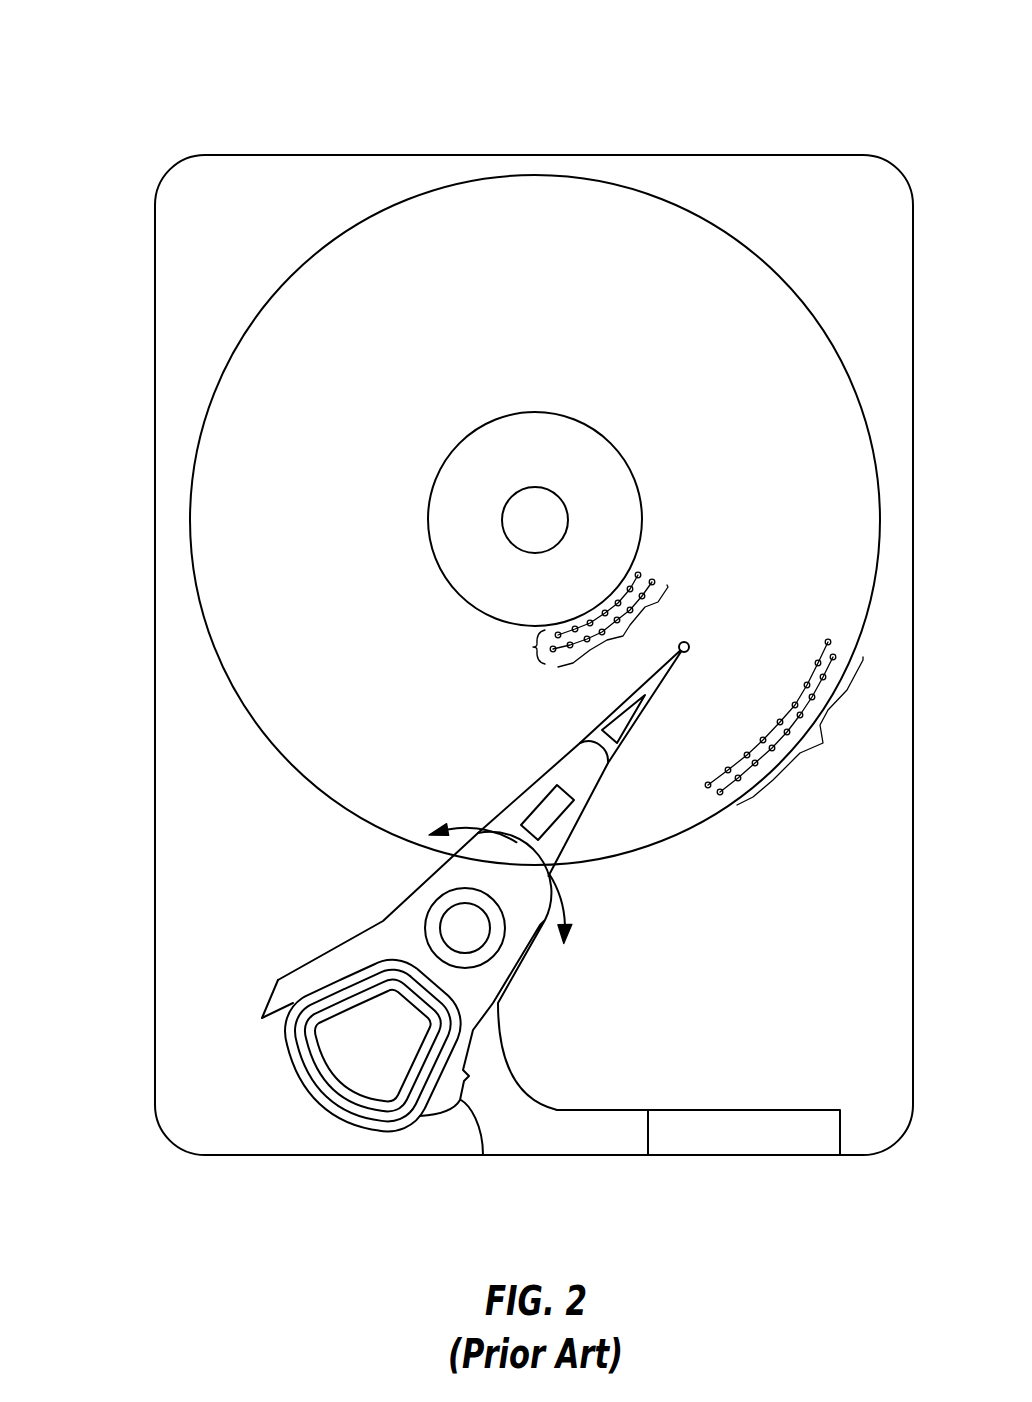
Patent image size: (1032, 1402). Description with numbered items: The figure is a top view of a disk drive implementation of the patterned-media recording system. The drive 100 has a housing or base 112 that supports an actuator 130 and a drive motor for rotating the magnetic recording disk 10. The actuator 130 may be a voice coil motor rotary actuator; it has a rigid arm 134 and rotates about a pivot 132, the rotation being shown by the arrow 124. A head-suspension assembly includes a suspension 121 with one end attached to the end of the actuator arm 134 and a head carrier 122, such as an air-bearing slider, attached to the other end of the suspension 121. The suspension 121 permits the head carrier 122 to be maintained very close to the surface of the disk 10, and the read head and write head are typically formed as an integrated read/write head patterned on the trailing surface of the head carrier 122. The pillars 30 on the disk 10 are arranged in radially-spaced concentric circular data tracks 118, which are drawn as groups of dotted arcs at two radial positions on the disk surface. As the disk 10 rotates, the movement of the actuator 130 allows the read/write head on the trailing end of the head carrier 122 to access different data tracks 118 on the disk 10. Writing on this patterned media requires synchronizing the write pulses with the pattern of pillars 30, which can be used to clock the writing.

The drive 100 is at (145, 37).
The housing or base 112 is at (820, 153).
The magnetic recording disk 10 is at (353, 225).
The data tracks 118 is at (533, 648).
The pillars 30 is at (613, 642).
The head carrier 122 is at (689, 650).
The suspension 121 is at (590, 737).
The rigid arm 134 is at (513, 798).
The arrow 124 is at (562, 905).
The pivot 132 is at (453, 921).
The actuator 130 is at (264, 998).